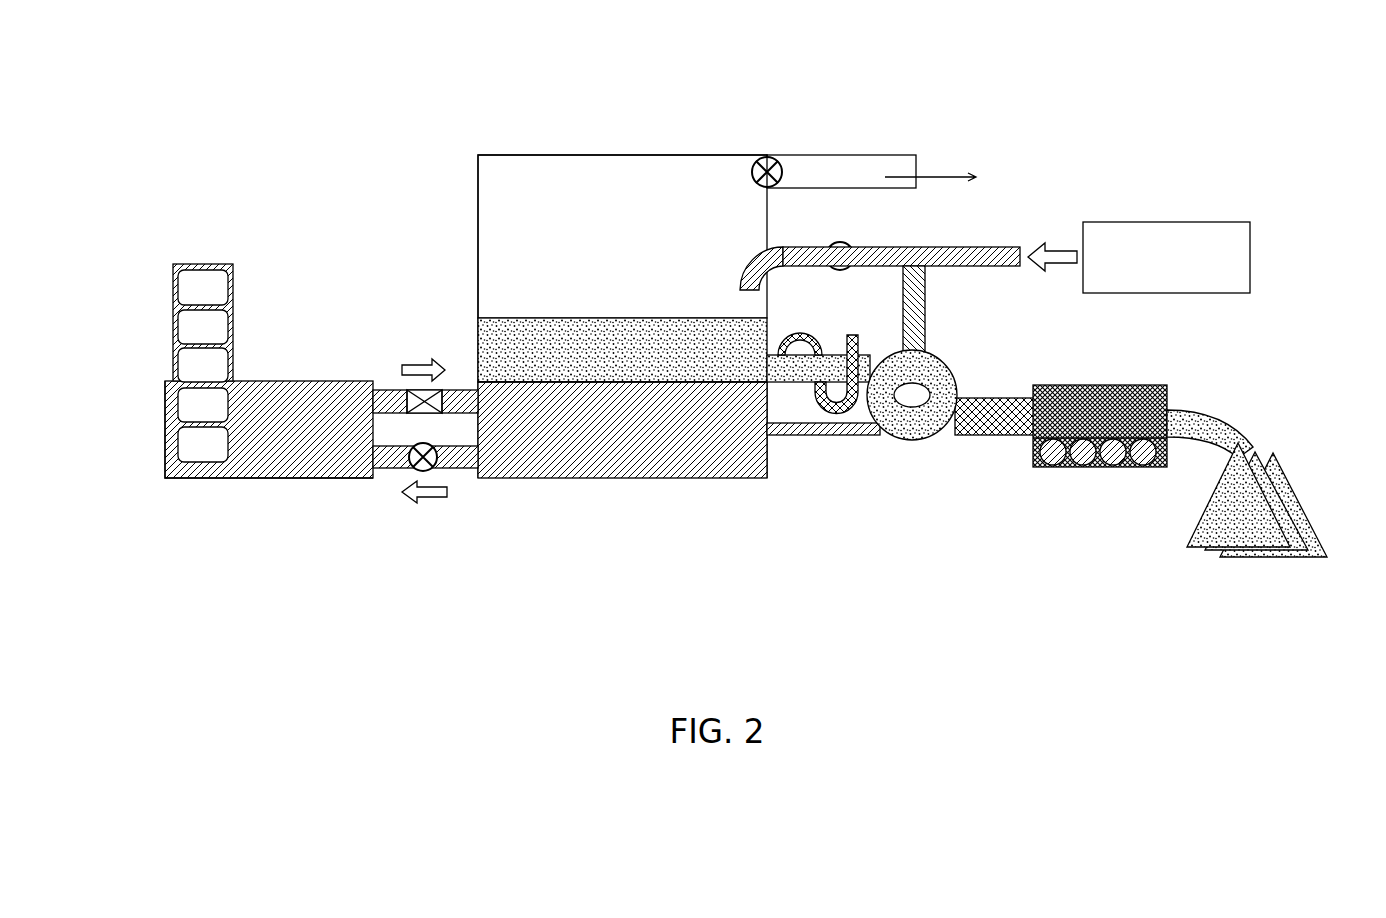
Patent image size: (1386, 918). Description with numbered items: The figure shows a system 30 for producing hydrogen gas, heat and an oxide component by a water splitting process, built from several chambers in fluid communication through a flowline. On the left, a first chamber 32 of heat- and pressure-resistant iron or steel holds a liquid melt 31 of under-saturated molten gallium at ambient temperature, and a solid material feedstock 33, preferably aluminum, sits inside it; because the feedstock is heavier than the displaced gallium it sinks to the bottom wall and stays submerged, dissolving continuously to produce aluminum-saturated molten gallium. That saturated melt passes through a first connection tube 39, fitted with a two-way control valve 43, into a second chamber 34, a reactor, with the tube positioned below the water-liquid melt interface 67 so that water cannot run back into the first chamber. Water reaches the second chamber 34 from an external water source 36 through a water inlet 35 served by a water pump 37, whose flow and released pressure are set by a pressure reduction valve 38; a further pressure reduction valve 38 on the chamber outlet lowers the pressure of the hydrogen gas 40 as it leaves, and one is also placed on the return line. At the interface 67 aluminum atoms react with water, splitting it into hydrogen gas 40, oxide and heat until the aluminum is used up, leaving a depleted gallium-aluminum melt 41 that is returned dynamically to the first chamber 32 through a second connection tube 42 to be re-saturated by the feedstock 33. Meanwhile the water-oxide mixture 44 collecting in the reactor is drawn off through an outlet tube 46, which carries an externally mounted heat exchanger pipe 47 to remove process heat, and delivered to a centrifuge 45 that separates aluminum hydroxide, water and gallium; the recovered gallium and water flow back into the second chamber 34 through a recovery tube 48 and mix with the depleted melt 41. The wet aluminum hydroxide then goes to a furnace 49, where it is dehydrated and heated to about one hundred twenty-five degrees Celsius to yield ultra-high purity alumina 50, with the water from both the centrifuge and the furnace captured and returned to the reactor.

The system 30 is at (736, 36).
The liquid melt 31 is at (275, 400).
The first chamber 32 is at (165, 430).
The solid material feedstock 33 is at (205, 262).
The second chamber 34 is at (500, 155).
The water inlet pipe 35 is at (745, 255).
The external water source 36 is at (1177, 222).
The water pump 37 is at (865, 268).
The pressure reduction valve 38 is at (413, 470).
The first connection tube 39 is at (385, 385).
The hydrogen gas 40 is at (615, 200).
The gallium-aluminum melt 41 is at (638, 440).
The second connection tube 42 is at (455, 470).
The two-way control valve 43 is at (445, 387).
The water-oxide mixture 44 is at (523, 333).
The centrifuge 45 is at (915, 437).
The outlet tube 46 is at (802, 382).
The heat exchanger pipe 47 is at (832, 405).
The recovery tube 48 is at (866, 437).
The furnace 49 is at (1117, 385).
The ultra-high purity alumina 50 is at (1295, 495).
The water-liquid melt interface 67 is at (495, 378).